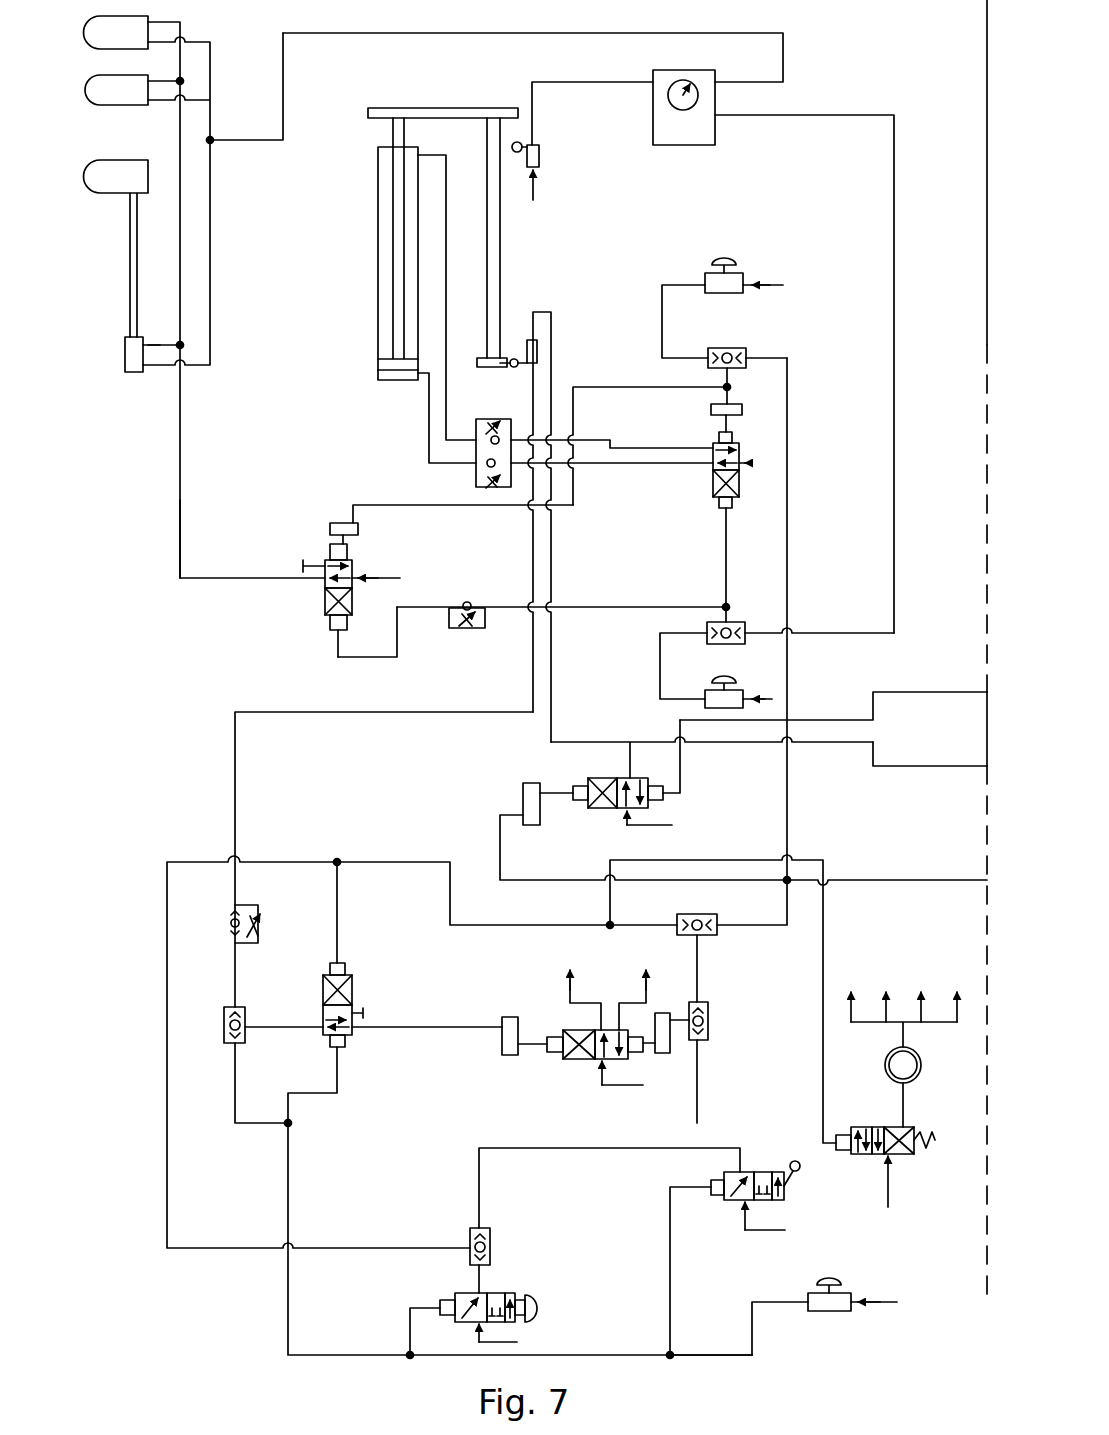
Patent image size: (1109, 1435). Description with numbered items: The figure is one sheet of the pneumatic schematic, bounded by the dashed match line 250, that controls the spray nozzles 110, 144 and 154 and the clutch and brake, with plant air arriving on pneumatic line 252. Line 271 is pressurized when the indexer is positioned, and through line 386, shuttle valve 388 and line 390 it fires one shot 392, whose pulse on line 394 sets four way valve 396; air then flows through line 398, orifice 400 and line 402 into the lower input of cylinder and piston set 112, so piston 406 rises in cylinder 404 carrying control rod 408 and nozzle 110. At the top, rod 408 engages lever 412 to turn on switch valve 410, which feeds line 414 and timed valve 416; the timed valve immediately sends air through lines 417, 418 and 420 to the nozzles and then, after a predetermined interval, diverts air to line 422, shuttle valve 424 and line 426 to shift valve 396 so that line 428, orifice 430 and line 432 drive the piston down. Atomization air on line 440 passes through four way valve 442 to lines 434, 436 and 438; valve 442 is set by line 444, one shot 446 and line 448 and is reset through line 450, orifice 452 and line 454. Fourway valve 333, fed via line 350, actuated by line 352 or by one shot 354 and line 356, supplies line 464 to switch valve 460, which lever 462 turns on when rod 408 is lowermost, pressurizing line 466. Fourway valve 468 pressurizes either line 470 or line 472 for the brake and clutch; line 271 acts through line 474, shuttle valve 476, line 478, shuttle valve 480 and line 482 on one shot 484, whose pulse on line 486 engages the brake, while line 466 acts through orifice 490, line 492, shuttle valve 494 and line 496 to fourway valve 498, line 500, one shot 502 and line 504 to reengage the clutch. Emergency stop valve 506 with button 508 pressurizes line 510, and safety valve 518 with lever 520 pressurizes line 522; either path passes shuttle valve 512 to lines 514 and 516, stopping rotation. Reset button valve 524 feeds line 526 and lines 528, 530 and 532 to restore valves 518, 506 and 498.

The spray nozzle 110 is at (85, 178).
The cylinder and piston set 112 is at (365, 218).
The spray nozzle 144 is at (85, 104).
The spray nozzle 154 is at (85, 45).
The dashed match line 250 is at (985, 50).
The pneumatic line 252 is at (537, 193).
The pneumatic line 271 is at (850, 880).
The fourway valve 333 is at (640, 812).
The pneumatic line 350 is at (883, 766).
The pneumatic line 352 is at (883, 692).
The one shot 354 is at (533, 783).
The pneumatic line 356 is at (555, 795).
The pneumatic line 386 is at (788, 530).
The shuttle valve 388 is at (733, 347).
The pneumatic line 390 is at (733, 386).
The one shot 392 is at (764, 400).
The pneumatic line 394 is at (723, 425).
The four way valve 396 is at (737, 457).
The pneumatic line 398 is at (600, 468).
The orifice 400 is at (476, 483).
The pneumatic line 402 is at (428, 420).
The cylinder 404 is at (378, 255).
The piston 406 is at (392, 137).
The control rod 408 is at (500, 270).
The switch valve 410 is at (540, 157).
The lever 412 is at (517, 160).
The pneumatic line 414 is at (555, 82).
The timed valve 416 is at (652, 97).
The pneumatic line 417 is at (510, 33).
The pneumatic line 418 is at (212, 231).
The pneumatic line 420 is at (197, 98).
The pneumatic line 422 is at (785, 115).
The shuttle valve 424 is at (725, 622).
The pneumatic line 426 is at (725, 557).
The pneumatic line 428 is at (590, 440).
The orifice 430 is at (476, 430).
The pneumatic line 432 is at (446, 263).
The pneumatic line 434 is at (180, 466).
The pneumatic line 436 is at (155, 343).
The pneumatic line 438 is at (163, 79).
The line 440 is at (378, 573).
The four way valve 442 is at (353, 563).
The line 444 is at (663, 385).
The one shot 446 is at (342, 523).
The pneumatic line 448 is at (335, 540).
The pneumatic line 450 is at (572, 608).
The orifice 452 is at (486, 628).
The pneumatic line 454 is at (397, 632).
The switch valve 460 is at (540, 350).
The lever 462 is at (516, 357).
The pneumatic line 464 is at (555, 712).
The pneumatic line 466 is at (235, 805).
The fourway valve 468 is at (573, 1062).
The pneumatic line 470 is at (575, 993).
The line 472 is at (640, 995).
The line 474 is at (737, 927).
The shuttle valve 476 is at (702, 913).
The line 478 is at (700, 962).
The shuttle valve 480 is at (709, 1012).
The line 482 is at (677, 1020).
The one shot 484 is at (664, 1055).
The line 486 is at (647, 1045).
The orifice 490 is at (262, 930).
The line 492 is at (232, 982).
The shuttle valve 494 is at (247, 1020).
The line 496 is at (263, 1030).
The fourway valve 498 is at (352, 993).
The pneumatic line 500 is at (388, 1025).
The one shot 502 is at (503, 1018).
The line 504 is at (543, 1037).
The four way valve 506 is at (495, 1293).
The button 508 is at (535, 1308).
The line 510 is at (478, 1282).
The shuttle valve 512 is at (492, 1247).
The line 514 is at (285, 862).
The line 516 is at (338, 917).
The fourway valve 518 is at (752, 1173).
The lever 520 is at (793, 1178).
The pneumatic line 522 is at (548, 1148).
The reset button valve 524 is at (845, 1293).
The pneumatic line 526 is at (678, 1352).
The line 528 is at (673, 1285).
The line 530 is at (410, 1338).
The line 532 is at (287, 1313).